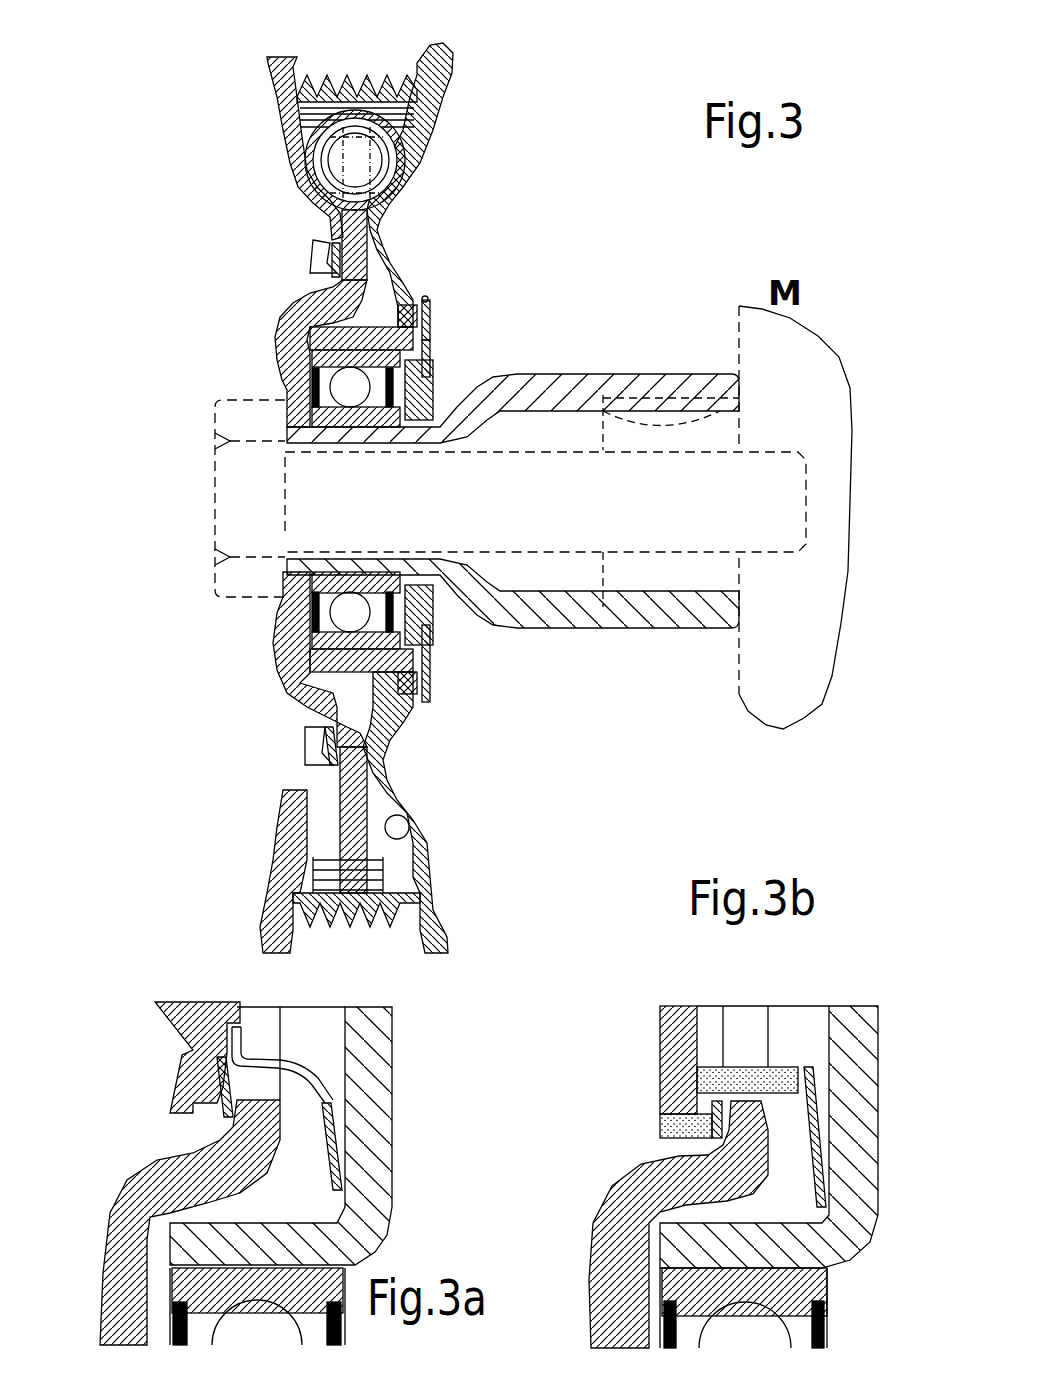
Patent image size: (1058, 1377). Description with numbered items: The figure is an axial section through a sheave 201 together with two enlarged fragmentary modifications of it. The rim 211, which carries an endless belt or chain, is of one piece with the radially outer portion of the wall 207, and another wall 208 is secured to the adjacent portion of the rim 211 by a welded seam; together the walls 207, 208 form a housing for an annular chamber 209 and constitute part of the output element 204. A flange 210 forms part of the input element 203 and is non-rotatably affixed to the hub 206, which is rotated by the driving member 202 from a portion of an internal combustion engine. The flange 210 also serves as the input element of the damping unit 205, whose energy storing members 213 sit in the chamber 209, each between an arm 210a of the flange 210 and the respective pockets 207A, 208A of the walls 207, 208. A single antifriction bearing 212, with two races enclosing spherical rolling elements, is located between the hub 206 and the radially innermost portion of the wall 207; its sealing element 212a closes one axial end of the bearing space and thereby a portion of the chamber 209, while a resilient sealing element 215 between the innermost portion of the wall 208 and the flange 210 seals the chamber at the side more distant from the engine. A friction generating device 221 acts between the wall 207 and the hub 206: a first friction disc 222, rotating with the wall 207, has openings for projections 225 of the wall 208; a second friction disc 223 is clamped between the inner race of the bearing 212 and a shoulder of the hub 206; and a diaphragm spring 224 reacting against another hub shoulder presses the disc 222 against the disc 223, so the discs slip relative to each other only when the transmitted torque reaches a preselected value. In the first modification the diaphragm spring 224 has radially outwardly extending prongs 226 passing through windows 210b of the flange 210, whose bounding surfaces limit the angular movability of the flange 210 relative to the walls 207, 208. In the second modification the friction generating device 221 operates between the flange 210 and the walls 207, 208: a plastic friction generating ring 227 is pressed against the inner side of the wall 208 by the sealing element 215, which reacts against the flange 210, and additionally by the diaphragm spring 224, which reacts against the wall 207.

In FIG. 3, the sheave 201 is at (567, 157).
In FIG. 3, the driving member 202 is at (627, 580).
In FIG. 3, the input element 203 is at (268, 632).
In FIG. 3, the output element 204 is at (305, 745).
In FIG. 3, the damping unit 205 is at (310, 127).
In FIG. 3, the hub 206 is at (645, 380).
In FIG. 3, the wall 207 is at (422, 145).
In FIG. 3A, the wall 207 is at (367, 1083).
In FIG. 3B, the wall 207 is at (693, 1242).
In FIG. 3, the pocket 207A is at (390, 160).
In FIG. 3, the wall 208 is at (297, 146).
In FIG. 3A, the wall 208 is at (187, 1082).
In FIG. 3B, the wall 208 is at (675, 1045).
In FIG. 3, the pocket 208A is at (317, 187).
In FIG. 3, the annular chamber 209 is at (330, 157).
In FIG. 3, the flange 210 is at (290, 313).
In FIG. 3A, the flange 210 is at (105, 1245).
In FIG. 3B, the flange 210 is at (649, 1171).
In FIG. 3, the arm 210a is at (383, 187).
In FIG. 3A, the window 210b is at (273, 1007).
In FIG. 3, the rim 211 is at (397, 83).
In FIG. 3, the antifriction bearing 212 is at (310, 377).
In FIG. 3, the sealing element 212a is at (316, 390).
In FIG. 3, the energy storing member 213 is at (368, 207).
In FIG. 3, the sealing element 215 is at (310, 253).
In FIG. 3A, the sealing element 215 is at (220, 1108).
In FIG. 3B, the sealing element 215 is at (712, 1108).
In FIG. 3, the friction generating device 221 is at (493, 323).
In FIG. 3A, the friction generating device 221 is at (314, 1035).
In FIG. 3B, the friction generating device 221 is at (798, 1049).
In FIG. 3, the first friction disc 222 is at (432, 340).
In FIG. 3, the second friction disc 223 is at (435, 355).
In FIG. 3, the diaphragm spring 224 is at (432, 375).
In FIG. 3A, the diaphragm spring 224 is at (337, 1147).
In FIG. 3B, the diaphragm spring 224 is at (816, 1060).
In FIG. 3, the projection 225 is at (433, 302).
In FIG. 3A, the prong 226 is at (260, 1067).
In FIG. 3B, the friction generating ring 227 is at (742, 1078).